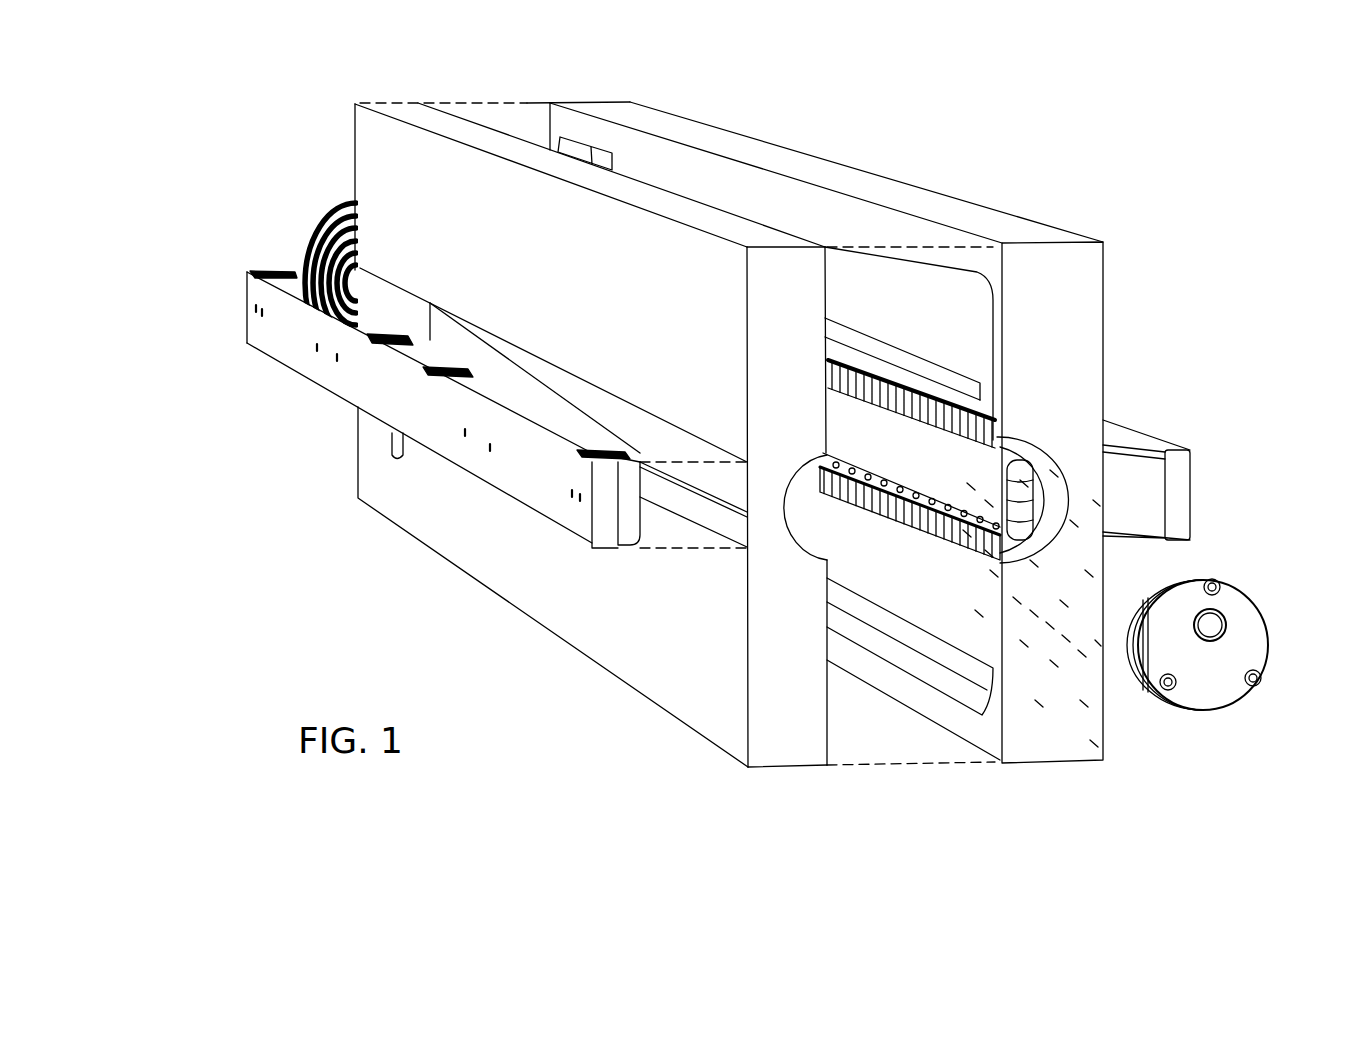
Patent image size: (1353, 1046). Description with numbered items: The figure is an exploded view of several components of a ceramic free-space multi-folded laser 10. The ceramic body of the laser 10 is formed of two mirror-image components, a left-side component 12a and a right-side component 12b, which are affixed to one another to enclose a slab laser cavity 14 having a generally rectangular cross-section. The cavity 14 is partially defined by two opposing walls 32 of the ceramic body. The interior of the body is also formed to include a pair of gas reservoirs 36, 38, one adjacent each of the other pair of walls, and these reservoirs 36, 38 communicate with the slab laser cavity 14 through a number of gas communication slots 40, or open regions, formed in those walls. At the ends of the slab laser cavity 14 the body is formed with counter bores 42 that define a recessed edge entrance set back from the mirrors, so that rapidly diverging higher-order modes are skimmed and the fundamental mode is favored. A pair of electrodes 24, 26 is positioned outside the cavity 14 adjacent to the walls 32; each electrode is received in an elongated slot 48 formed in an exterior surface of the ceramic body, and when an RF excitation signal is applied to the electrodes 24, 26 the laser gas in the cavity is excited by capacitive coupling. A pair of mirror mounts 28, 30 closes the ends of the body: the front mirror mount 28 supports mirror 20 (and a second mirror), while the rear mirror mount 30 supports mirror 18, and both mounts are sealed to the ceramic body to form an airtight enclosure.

The laser 10 is at (925, 137).
The left-side component 12a is at (510, 198).
The right-side component 12b is at (1010, 230).
The slab laser cavity 14 is at (920, 466).
The mirror 18 is at (307, 243).
The mirror 20 is at (1222, 628).
The electrode 24 is at (608, 510).
The electrode 26 is at (1170, 500).
The mirror mount 28 is at (1207, 693).
The mirror mount 30 is at (338, 207).
The opposing walls 32 is at (958, 478).
The gas reservoir 36 is at (932, 316).
The gas reservoir 38 is at (928, 604).
The gas communication slots 40 is at (957, 400).
The counter bores 42 is at (1045, 492).
The elongated slot 48 is at (720, 473).